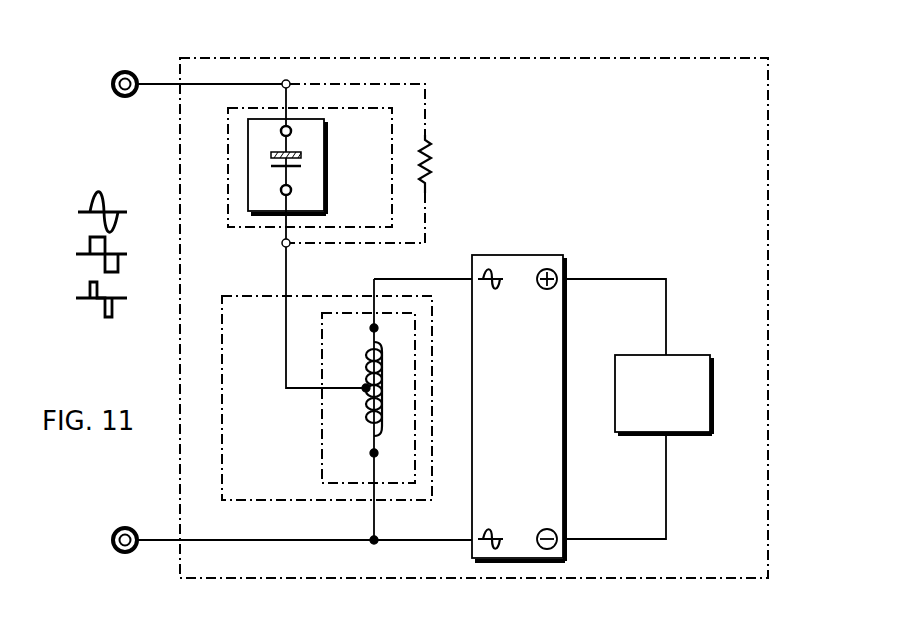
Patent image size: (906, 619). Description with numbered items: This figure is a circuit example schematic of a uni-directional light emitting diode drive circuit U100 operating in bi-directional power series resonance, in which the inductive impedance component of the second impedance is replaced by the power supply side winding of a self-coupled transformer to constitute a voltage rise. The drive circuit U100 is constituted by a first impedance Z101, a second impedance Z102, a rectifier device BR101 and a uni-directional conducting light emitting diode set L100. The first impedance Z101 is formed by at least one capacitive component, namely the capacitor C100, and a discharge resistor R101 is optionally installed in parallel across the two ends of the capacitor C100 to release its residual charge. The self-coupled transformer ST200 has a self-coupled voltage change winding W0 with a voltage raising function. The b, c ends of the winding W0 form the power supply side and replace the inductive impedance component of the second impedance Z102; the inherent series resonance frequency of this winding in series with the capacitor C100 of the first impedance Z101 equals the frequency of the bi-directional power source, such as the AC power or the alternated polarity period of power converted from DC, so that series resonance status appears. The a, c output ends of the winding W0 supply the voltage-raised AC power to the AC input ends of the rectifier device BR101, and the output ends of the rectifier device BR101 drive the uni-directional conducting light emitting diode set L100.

The uni-directional light emitting diode drive circuit U100 is at (620, 58).
The first impedance Z101 is at (255, 106).
The capacitor C100 is at (300, 162).
The discharge resistor R101 is at (459, 164).
The second impedance Z102 is at (274, 296).
The self-coupled transformer ST200 is at (320, 405).
The self-coupled voltage change winding W0 is at (368, 410).
The a end a is at (388, 329).
The b end b is at (384, 389).
The c end c is at (387, 454).
The rectifier device BR101 is at (523, 255).
The uni-directional conducting light emitting diode set L100 is at (682, 355).